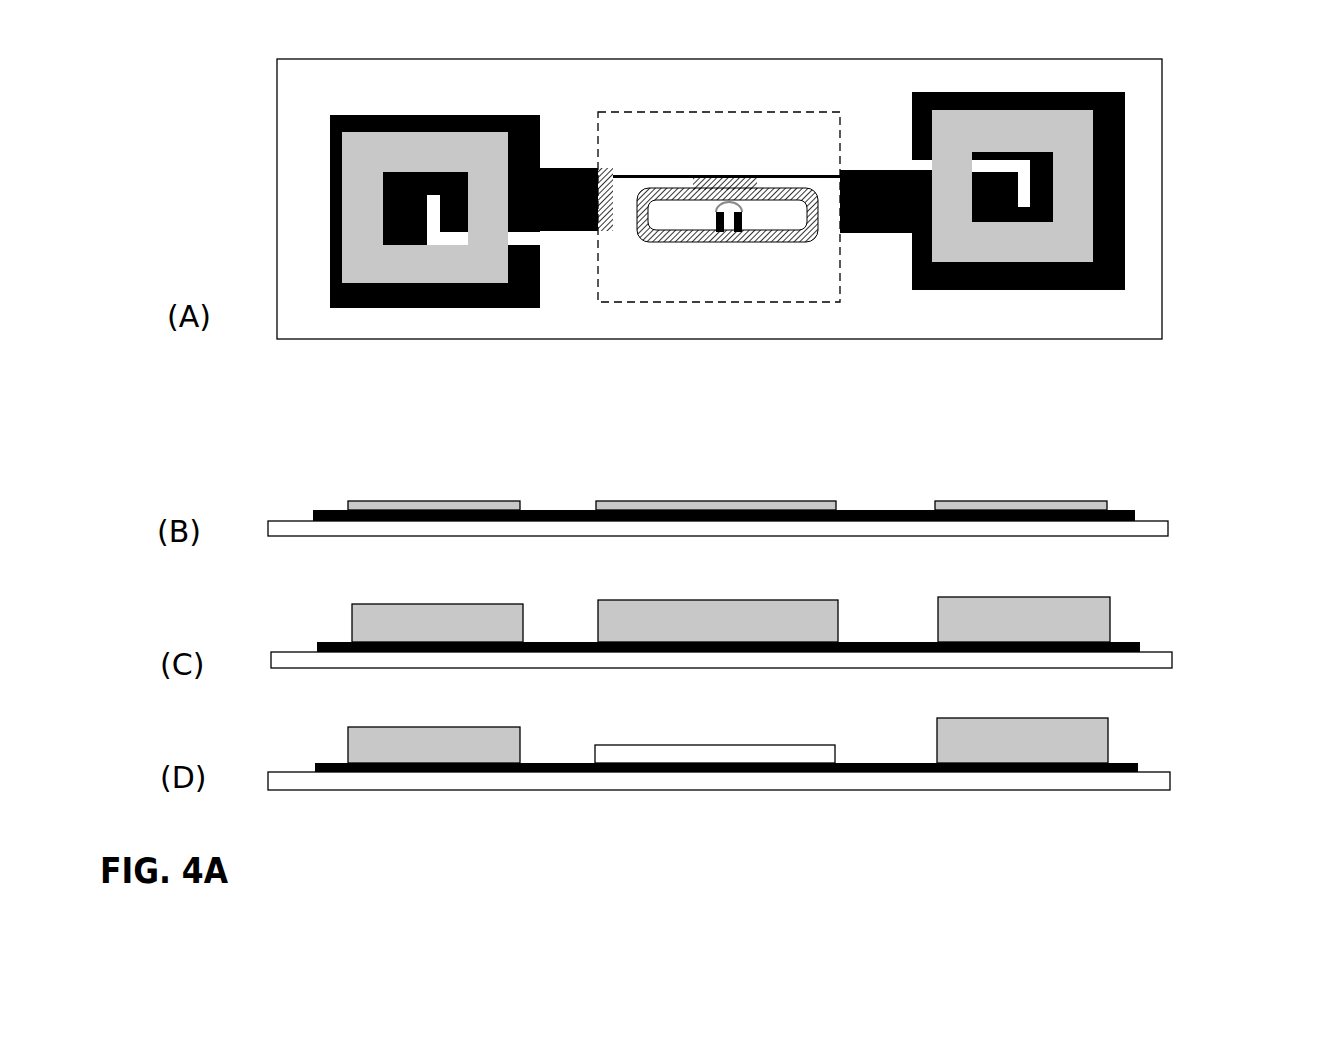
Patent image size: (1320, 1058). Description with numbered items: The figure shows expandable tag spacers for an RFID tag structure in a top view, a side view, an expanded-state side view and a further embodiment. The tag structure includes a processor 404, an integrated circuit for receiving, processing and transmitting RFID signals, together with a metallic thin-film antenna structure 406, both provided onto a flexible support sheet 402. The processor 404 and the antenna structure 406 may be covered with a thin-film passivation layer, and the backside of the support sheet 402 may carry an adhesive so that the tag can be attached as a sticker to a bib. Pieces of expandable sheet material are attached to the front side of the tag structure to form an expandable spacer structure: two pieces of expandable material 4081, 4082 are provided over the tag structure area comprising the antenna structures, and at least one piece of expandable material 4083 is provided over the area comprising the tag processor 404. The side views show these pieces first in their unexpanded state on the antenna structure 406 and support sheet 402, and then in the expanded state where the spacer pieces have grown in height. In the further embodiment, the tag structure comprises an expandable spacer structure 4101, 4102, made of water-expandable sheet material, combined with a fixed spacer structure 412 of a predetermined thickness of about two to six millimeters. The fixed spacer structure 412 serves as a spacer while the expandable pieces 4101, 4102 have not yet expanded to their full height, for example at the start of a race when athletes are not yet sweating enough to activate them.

The flexible support sheet 402 is at (302, 315).
The processor 404 is at (693, 175).
The metallic thin-film antenna structure 406 is at (527, 308).
The piece of expandable sheet material 4081 is at (418, 267).
The piece of expandable sheet material 4082 is at (1022, 248).
The piece of expandable sheet material 4083 is at (700, 503).
The expandable spacer structure 4101 is at (383, 737).
The expandable spacer structure 4102 is at (1093, 737).
The fixed spacer structure 412 is at (702, 745).